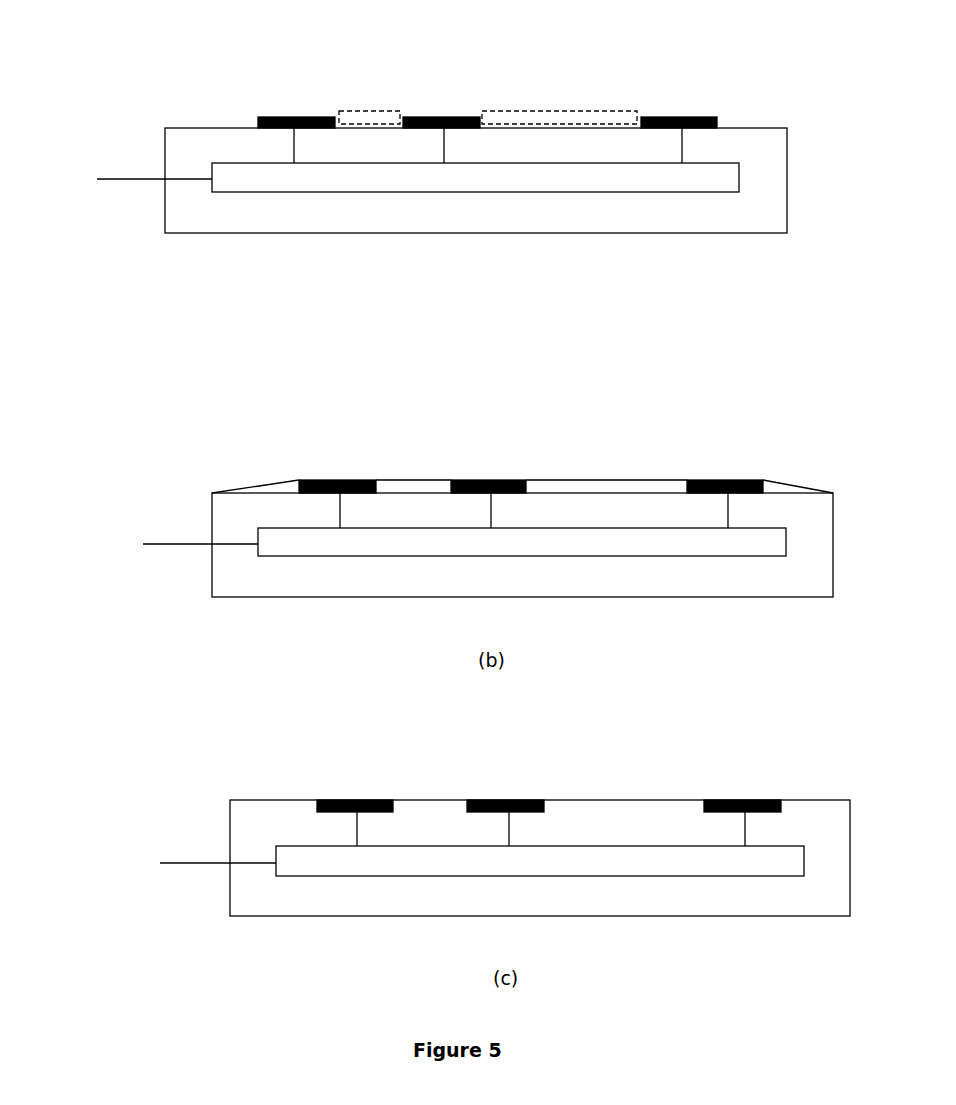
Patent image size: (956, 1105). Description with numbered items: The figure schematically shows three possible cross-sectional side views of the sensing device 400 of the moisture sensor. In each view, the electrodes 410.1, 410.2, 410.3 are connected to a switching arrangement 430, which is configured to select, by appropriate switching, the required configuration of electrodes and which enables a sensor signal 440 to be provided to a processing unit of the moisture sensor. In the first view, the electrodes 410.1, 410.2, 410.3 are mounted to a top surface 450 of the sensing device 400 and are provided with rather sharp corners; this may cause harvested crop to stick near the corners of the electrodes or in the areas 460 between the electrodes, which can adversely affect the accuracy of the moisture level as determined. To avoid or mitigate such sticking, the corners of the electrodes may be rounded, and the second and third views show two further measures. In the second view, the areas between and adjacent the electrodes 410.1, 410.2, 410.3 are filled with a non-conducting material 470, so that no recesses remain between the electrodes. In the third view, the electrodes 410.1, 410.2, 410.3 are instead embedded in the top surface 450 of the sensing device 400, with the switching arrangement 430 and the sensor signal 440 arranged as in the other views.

The sensing device 400 is at (106, 115).
The electrode 410.1 is at (293, 117).
The electrode 410.2 is at (482, 117).
The electrode 410.3 is at (718, 117).
The switching arrangement 430 is at (665, 180).
The sensor signal 440 is at (142, 180).
The top surface 450 is at (774, 128).
The areas between the electrodes 460 is at (377, 110).
The non-conducting material 470 is at (522, 466).